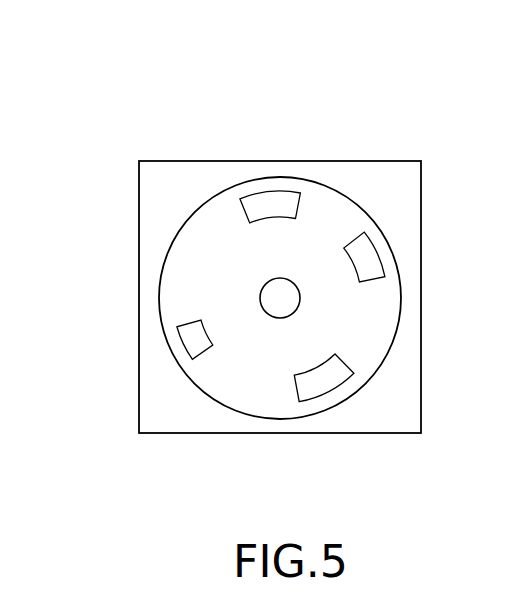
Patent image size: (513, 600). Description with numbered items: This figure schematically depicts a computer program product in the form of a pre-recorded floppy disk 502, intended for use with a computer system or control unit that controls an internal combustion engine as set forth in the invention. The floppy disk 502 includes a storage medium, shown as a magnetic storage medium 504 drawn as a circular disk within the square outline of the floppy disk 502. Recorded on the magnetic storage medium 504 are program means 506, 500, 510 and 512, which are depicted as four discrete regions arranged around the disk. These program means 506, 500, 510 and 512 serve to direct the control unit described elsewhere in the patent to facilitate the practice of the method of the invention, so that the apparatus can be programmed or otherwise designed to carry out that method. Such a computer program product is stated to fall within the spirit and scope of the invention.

The program means 500 is at (318, 382).
The pre-recorded floppy disk 502 is at (98, 128).
The magnetic storage medium 504 is at (357, 310).
The program means 506 is at (190, 338).
The program means 510 is at (363, 256).
The program means 512 is at (286, 203).